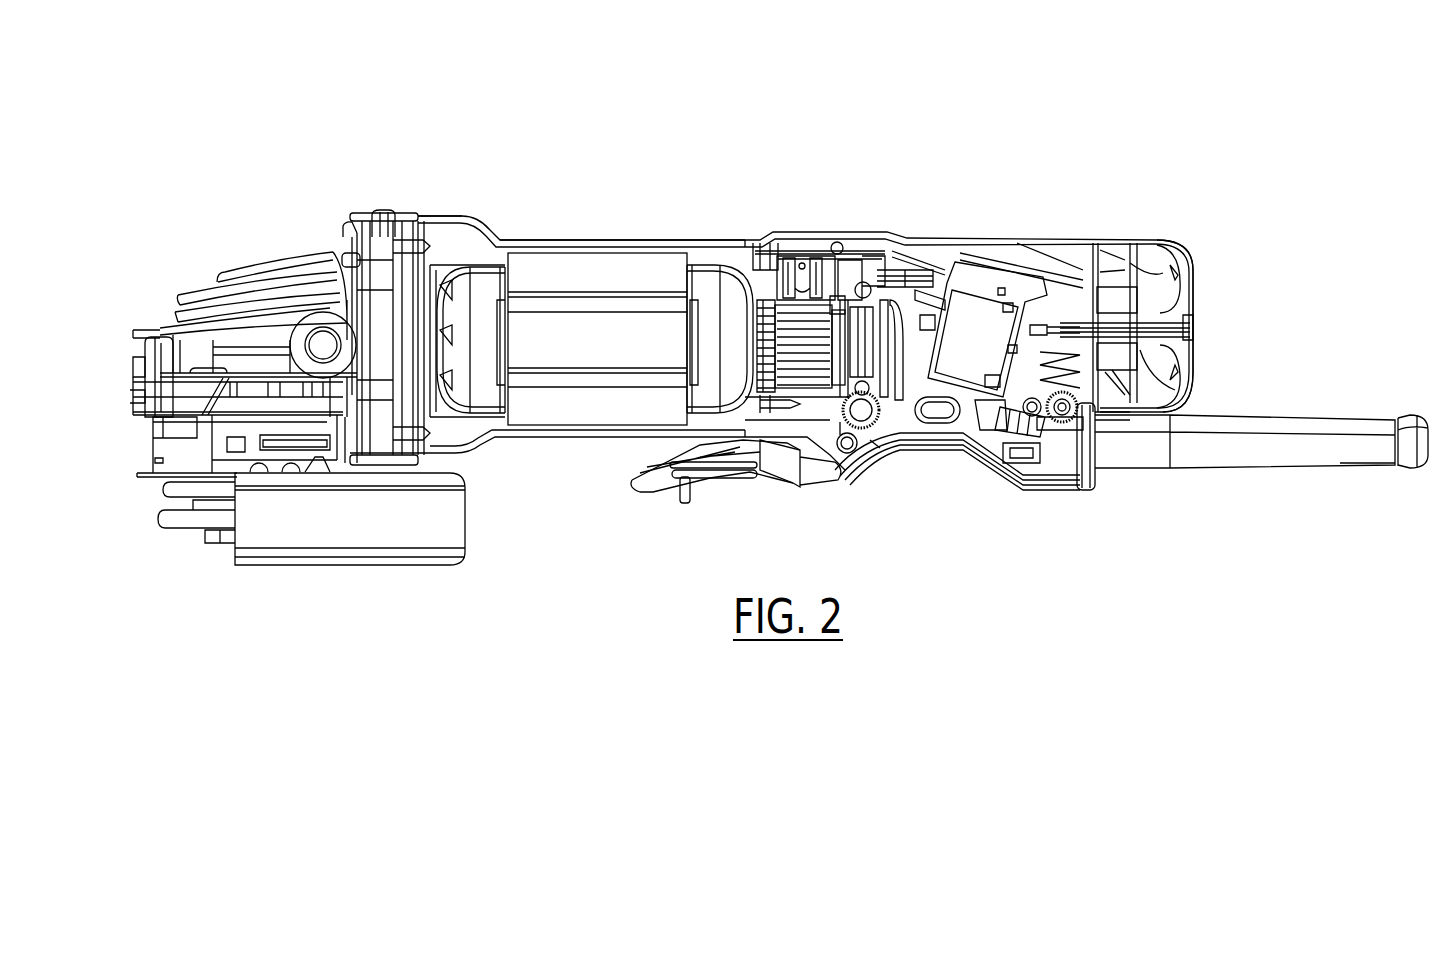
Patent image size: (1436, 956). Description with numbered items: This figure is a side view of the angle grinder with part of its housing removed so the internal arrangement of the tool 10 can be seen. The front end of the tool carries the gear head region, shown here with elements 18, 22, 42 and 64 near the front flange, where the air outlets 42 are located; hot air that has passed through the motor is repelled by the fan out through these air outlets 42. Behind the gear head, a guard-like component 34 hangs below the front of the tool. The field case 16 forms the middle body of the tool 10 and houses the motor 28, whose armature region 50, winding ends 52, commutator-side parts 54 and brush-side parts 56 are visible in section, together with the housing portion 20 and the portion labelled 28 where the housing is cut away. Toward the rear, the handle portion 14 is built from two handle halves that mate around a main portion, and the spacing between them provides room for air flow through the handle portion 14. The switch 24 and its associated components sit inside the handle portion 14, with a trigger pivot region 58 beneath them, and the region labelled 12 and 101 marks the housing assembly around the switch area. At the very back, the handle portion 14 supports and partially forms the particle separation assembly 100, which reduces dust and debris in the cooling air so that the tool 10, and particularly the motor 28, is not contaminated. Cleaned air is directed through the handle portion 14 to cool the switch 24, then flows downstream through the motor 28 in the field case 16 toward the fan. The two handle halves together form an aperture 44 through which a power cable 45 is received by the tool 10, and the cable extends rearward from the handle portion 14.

The tool 10 is at (246, 74).
The housing 12 is at (742, 192).
The handle portion 14 is at (804, 237).
The field case 16 is at (614, 243).
The gear case 18 is at (255, 262).
The motor housing 20 is at (745, 243).
The gear case flange 22 is at (400, 217).
The switch 24 is at (968, 430).
The motor 28 is at (532, 243).
The guard 34 is at (205, 538).
The air outlets 42 is at (347, 236).
The aperture 44 is at (1100, 475).
The power cord 45 is at (1213, 452).
The housing bottom wall 50 is at (577, 430).
The armature windings 52 is at (475, 268).
The commutator 54 is at (797, 325).
The brush holder 56 is at (822, 273).
The trigger pivot 58 is at (858, 428).
The bearing plate 64 is at (402, 408).
The particle separation assembly 100 is at (1130, 225).
The gear head assembly 101 is at (446, 194).